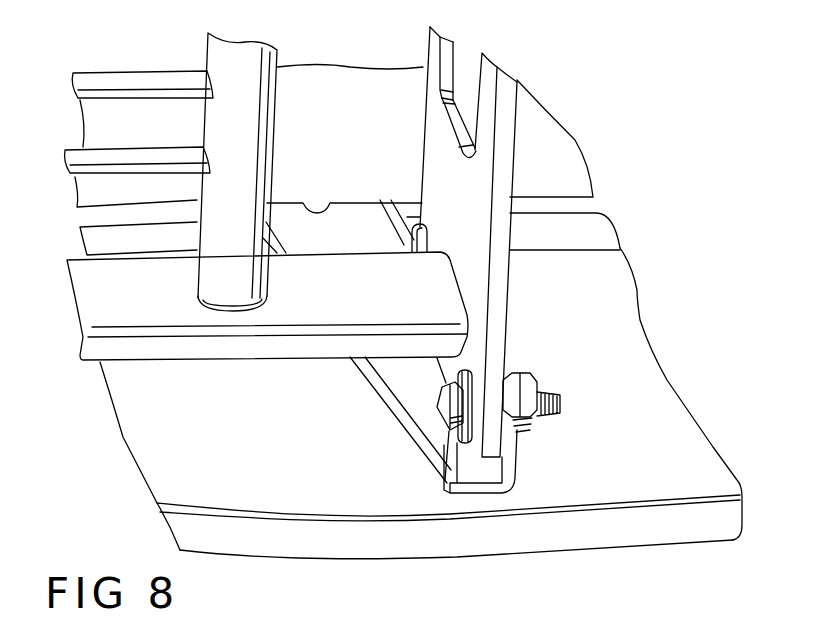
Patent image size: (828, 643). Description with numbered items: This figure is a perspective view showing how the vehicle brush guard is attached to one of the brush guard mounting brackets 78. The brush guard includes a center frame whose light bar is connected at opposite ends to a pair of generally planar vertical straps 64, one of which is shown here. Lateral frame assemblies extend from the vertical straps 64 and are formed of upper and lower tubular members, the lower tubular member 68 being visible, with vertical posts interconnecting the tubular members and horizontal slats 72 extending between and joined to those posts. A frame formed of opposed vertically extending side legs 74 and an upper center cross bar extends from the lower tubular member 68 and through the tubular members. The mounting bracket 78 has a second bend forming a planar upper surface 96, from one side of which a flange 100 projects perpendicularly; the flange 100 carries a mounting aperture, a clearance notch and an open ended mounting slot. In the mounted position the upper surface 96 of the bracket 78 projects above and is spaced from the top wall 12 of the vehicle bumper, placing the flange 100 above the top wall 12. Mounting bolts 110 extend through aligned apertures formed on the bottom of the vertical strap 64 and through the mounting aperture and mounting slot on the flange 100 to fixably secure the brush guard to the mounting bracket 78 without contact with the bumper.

The top wall 12 is at (157, 435).
The vertical strap 64 is at (497, 320).
The lower tubular member 68 is at (277, 303).
The horizontal slat 72 is at (140, 153).
The side leg 74 is at (213, 260).
The brush guard mounting bracket 78 is at (403, 394).
The upper surface 96 is at (385, 367).
The flange 100 is at (513, 440).
The mounting bolt 110 is at (397, 217).